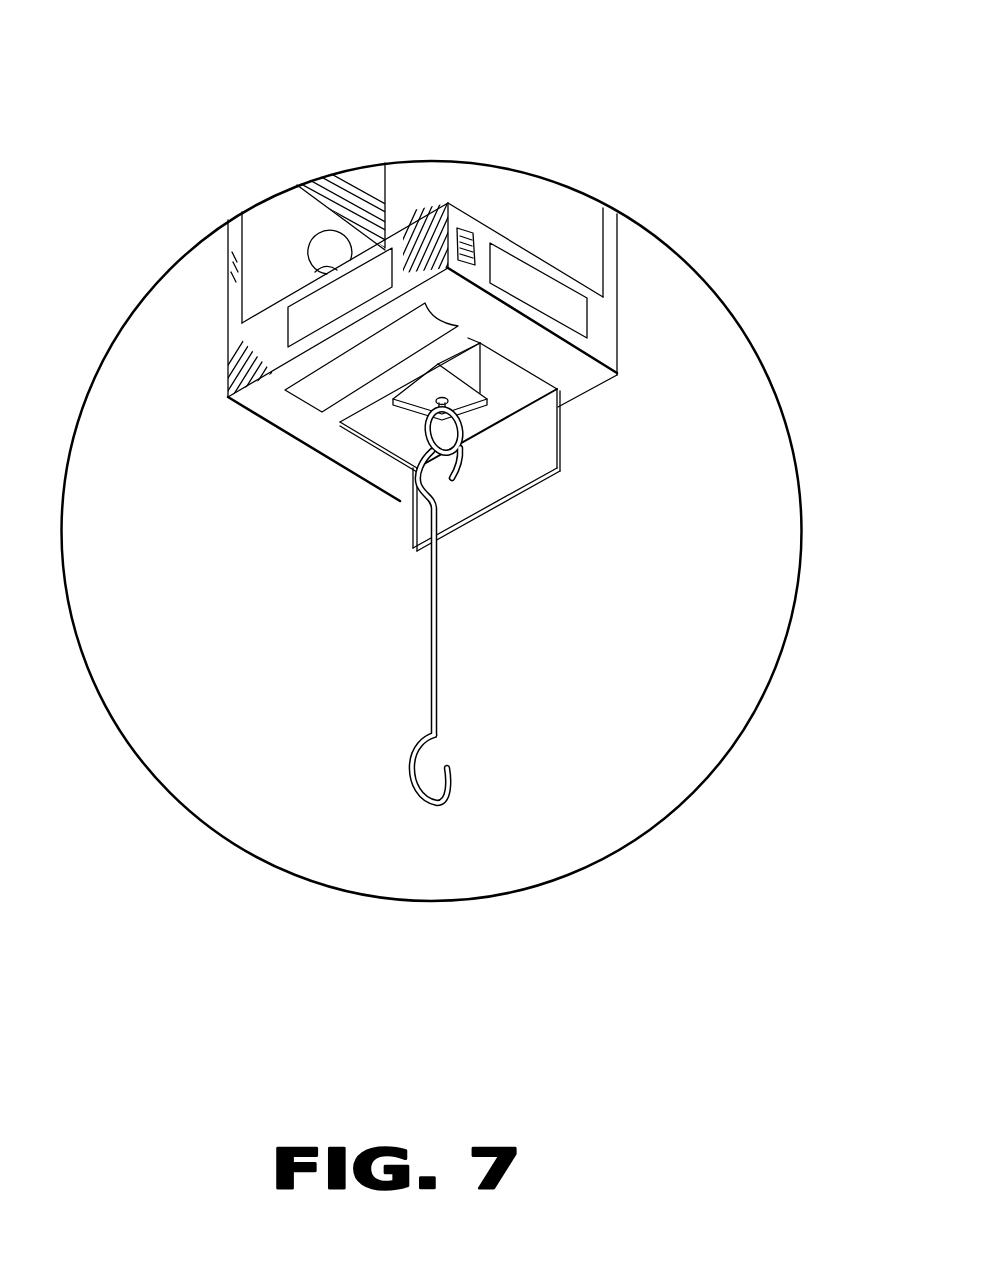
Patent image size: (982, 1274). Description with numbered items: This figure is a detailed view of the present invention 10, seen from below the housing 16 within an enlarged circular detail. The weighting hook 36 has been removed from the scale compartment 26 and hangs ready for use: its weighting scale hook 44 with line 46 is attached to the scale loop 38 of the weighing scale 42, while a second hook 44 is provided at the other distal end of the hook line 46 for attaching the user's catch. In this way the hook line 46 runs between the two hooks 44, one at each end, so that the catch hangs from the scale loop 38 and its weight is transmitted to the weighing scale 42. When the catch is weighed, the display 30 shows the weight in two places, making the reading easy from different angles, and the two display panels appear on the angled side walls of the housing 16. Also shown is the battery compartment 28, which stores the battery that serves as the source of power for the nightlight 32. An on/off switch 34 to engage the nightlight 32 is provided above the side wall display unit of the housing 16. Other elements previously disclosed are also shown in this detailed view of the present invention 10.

The present invention 10 is at (467, 126).
The housing 16 is at (227, 340).
The scale compartment 26 is at (503, 393).
The battery compartment 28 is at (320, 382).
The display 30 is at (548, 276).
The nightlight 32 is at (306, 253).
The on/off switch 34 is at (476, 265).
The weighting hook 36 is at (435, 690).
The scale loop 38 is at (412, 418).
The weighing scale 42 is at (393, 402).
The hook 44 is at (415, 484).
The hook line 46 is at (430, 630).